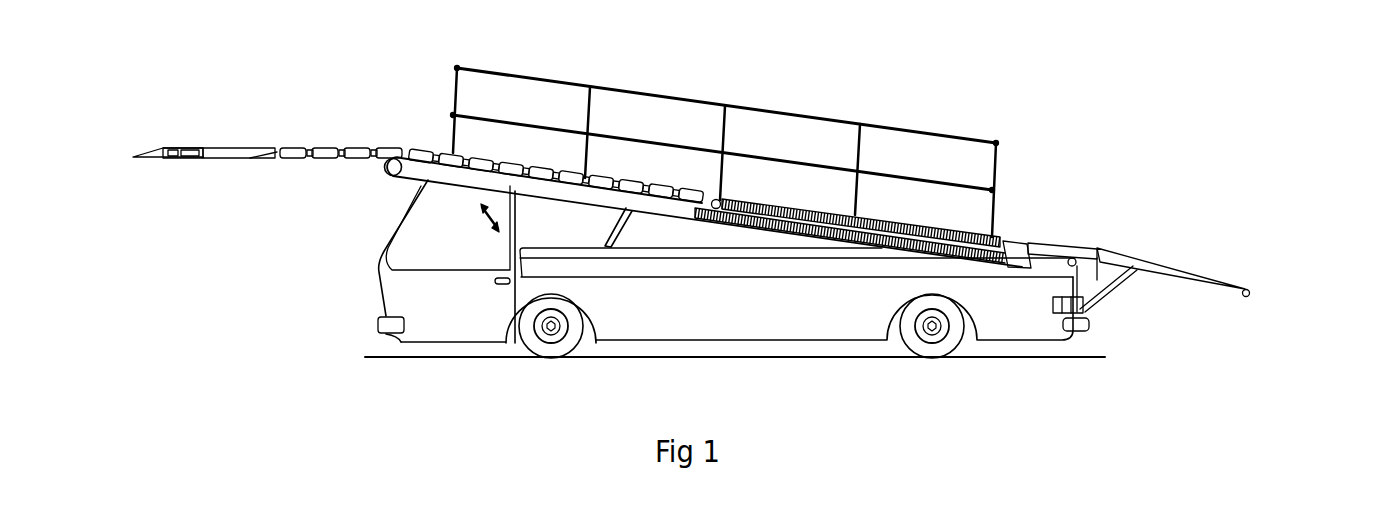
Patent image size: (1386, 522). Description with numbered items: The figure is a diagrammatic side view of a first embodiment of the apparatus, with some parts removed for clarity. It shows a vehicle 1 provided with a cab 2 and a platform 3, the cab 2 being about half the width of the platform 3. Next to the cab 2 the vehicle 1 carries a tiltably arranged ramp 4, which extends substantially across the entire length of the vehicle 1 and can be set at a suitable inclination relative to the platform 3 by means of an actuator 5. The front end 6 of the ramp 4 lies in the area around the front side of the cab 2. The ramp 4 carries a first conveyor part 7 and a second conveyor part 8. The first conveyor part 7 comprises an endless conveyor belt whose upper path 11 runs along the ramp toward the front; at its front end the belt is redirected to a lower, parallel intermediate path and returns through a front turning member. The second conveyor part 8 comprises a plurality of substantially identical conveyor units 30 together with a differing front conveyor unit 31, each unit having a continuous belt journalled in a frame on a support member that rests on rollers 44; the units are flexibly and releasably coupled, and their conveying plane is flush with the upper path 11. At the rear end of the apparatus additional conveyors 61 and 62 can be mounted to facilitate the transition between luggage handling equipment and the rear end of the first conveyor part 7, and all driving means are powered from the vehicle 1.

The vehicle 1 is at (746, 341).
The cab 2 is at (418, 247).
The platform 3 is at (712, 250).
The ramp 4 is at (598, 198).
The actuator 5 is at (613, 243).
The front end 6 is at (384, 167).
The first conveyor part 7 is at (933, 227).
The second conveyor part 8 is at (420, 151).
The upper path 11 is at (1005, 234).
The conveyor units 30 is at (588, 180).
The front conveyor unit 31 is at (262, 149).
The rollers 44 is at (269, 160).
The additional conveyor 61 is at (1160, 268).
The additional conveyor 62 is at (1057, 244).